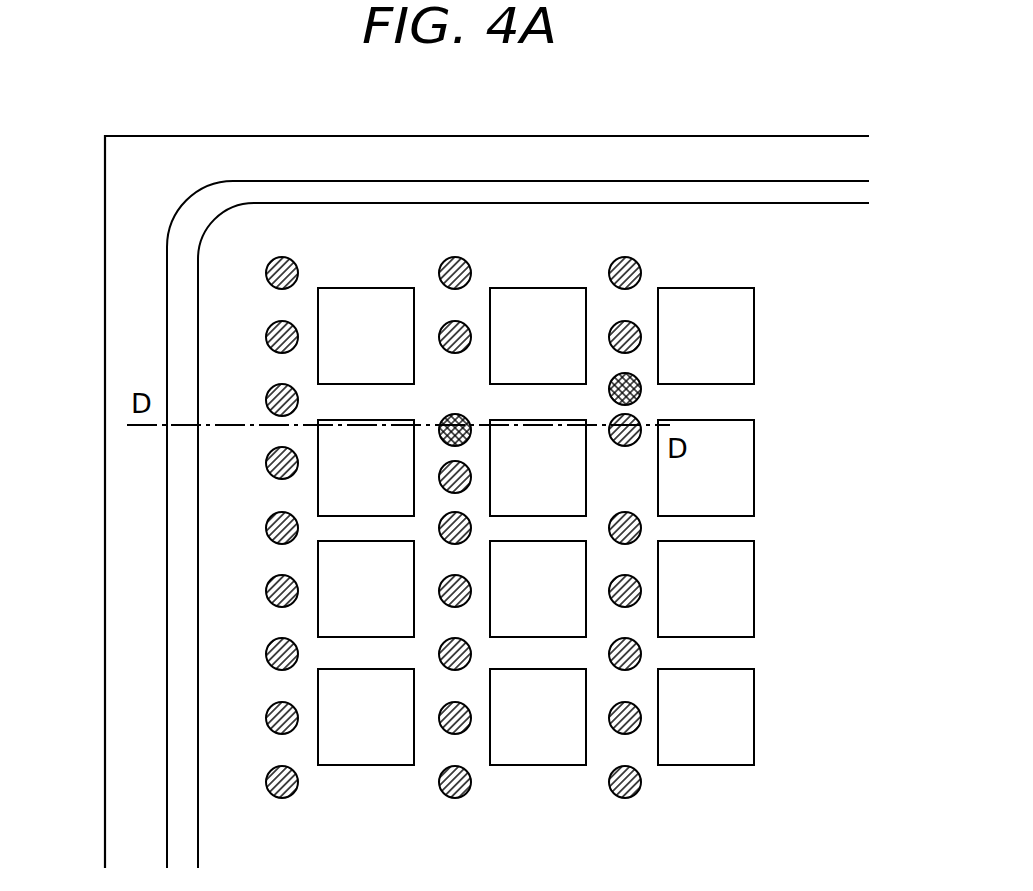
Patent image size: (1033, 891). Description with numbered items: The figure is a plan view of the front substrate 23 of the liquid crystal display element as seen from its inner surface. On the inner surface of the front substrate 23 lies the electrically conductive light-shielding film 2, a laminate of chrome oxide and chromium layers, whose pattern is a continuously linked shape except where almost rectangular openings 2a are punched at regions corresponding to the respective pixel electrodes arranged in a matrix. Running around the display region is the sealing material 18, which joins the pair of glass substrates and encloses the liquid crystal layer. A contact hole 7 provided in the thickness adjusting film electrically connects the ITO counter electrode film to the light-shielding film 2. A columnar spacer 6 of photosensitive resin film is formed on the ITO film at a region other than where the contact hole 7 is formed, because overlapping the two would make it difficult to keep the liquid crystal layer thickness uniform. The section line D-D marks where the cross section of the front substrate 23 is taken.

The light-shielding film 2 is at (368, 242).
The openings 2a is at (358, 478).
The columnar spacer 6 is at (464, 421).
The contact hole 7 is at (637, 418).
The sealing material 18 is at (697, 193).
The front substrate 23 is at (724, 137).